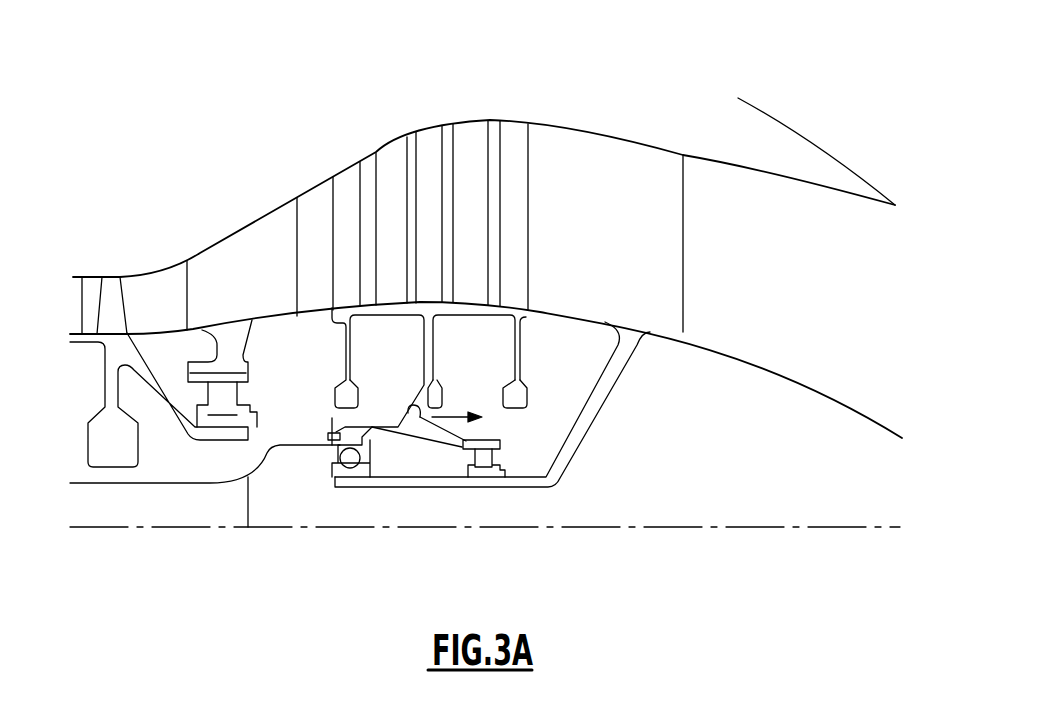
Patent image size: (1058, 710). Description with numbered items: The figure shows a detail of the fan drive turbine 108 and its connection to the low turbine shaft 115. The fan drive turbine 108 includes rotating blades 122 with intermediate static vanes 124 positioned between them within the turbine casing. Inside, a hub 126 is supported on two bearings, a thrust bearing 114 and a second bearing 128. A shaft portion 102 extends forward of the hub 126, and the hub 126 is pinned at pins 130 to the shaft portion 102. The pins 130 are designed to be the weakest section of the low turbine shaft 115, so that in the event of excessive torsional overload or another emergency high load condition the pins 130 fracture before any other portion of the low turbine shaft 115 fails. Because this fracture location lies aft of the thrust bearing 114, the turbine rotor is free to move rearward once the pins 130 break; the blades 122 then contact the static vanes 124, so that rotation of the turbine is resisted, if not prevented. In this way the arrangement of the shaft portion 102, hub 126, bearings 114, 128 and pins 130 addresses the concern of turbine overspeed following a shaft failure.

The shaft portion 102 is at (268, 431).
The fan drive turbine 108 is at (514, 89).
The thrust bearing 114 is at (334, 513).
The low turbine shaft 115 is at (99, 517).
The blades 122 is at (522, 247).
The intermediate static vanes 124 is at (468, 152).
The hub 126 is at (438, 362).
The bearing 128 is at (498, 457).
The pins 130 is at (337, 435).